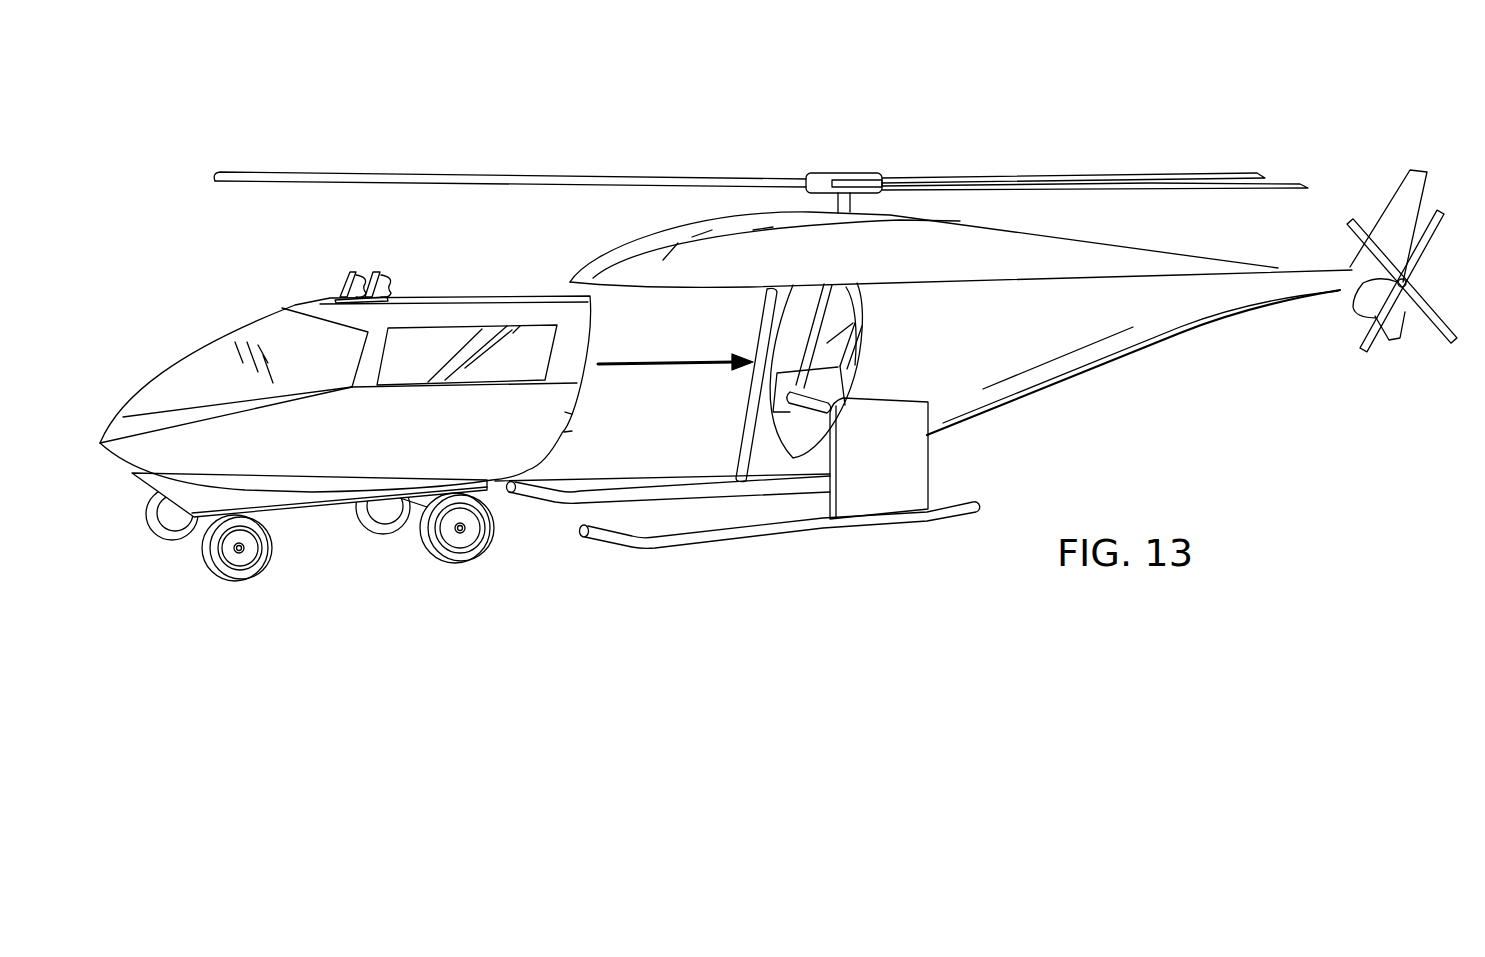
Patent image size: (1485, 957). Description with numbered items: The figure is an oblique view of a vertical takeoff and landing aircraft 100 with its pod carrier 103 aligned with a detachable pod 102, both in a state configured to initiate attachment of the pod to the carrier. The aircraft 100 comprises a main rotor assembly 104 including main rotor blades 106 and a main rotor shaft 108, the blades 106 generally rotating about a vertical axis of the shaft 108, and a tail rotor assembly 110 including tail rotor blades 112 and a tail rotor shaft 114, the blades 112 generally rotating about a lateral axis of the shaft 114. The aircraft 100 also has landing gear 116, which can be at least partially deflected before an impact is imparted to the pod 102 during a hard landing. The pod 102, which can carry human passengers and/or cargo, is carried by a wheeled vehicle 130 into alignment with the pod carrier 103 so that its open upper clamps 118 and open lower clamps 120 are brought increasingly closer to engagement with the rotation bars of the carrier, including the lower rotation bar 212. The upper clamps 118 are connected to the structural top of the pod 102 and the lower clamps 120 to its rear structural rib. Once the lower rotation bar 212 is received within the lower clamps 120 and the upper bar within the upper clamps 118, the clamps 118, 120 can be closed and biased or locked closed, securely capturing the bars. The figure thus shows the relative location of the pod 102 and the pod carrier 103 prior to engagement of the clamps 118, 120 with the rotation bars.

The vertical takeoff and landing aircraft 100 is at (368, 78).
The detachable pod 102 is at (250, 324).
The pod carrier 103 is at (1062, 384).
The main rotor assembly 104 is at (818, 155).
The main rotor blades 106 is at (1214, 173).
The main rotor shaft 108 is at (852, 204).
The tail rotor assembly 110 is at (1365, 378).
The tail rotor blades 112 is at (1425, 303).
The tail rotor shaft 114 is at (1365, 303).
The landing gear 116 is at (720, 542).
The upper clamps 118 is at (348, 272).
The lower clamps 120 is at (568, 430).
The wheeled vehicle 130 is at (338, 504).
The lower rotation bar 212 is at (797, 427).